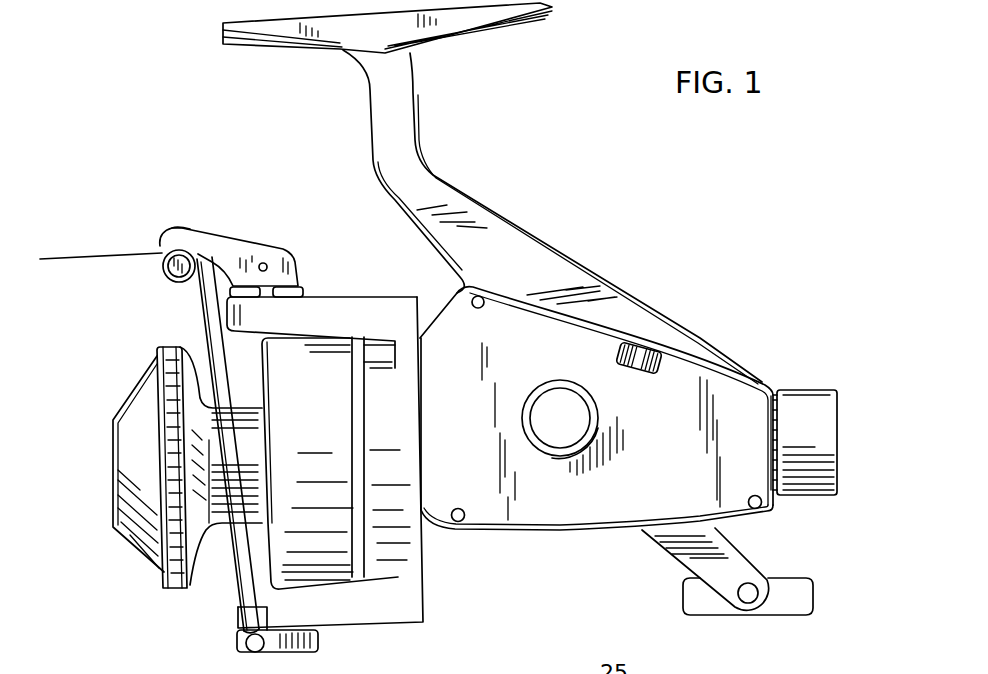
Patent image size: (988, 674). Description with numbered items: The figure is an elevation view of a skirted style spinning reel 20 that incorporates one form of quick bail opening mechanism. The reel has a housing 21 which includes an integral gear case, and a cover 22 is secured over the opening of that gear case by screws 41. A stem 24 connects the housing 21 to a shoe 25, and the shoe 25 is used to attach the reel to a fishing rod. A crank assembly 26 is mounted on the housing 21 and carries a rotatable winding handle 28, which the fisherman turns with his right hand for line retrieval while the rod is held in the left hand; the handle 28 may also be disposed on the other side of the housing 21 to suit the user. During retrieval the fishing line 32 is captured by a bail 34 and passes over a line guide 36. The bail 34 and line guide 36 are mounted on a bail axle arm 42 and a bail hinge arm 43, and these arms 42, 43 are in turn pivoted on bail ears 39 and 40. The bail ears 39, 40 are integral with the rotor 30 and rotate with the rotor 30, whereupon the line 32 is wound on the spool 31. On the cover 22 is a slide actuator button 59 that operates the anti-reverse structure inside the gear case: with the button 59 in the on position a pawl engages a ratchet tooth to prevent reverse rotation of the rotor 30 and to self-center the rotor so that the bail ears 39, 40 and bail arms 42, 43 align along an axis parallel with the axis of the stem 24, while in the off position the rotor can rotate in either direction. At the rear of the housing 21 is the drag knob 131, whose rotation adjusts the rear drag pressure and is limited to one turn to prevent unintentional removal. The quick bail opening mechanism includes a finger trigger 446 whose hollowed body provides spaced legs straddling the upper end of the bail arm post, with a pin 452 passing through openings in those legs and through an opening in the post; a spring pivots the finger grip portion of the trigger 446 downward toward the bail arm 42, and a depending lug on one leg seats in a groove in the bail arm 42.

The spinning reel 20 is at (607, 213).
The housing 21 is at (557, 538).
The cover 22 is at (621, 513).
The stem 24 is at (448, 197).
The shoe 25 is at (462, 19).
The crank assembly 26 is at (868, 560).
The winding handle 28 is at (787, 603).
The rotor 30 is at (420, 550).
The spool 31 is at (180, 583).
The fishing line 32 is at (126, 253).
The bail 34 is at (201, 319).
The line guide 36 is at (162, 271).
The bail ear 39 is at (347, 310).
The bail ear 40 is at (372, 615).
The screws 41 is at (770, 521).
The bail axle arm 42 is at (215, 262).
The bail hinge arm 43 is at (307, 650).
The slide actuator button 59 is at (640, 356).
The drag knob 131 is at (800, 403).
The finger trigger 446 is at (178, 227).
The pin 452 is at (263, 262).